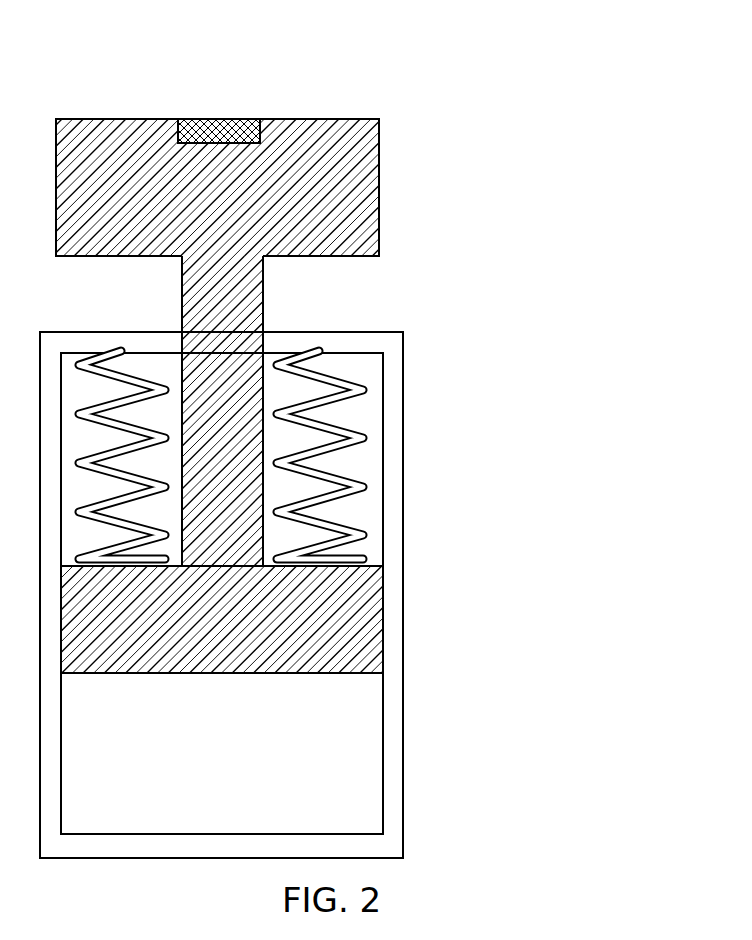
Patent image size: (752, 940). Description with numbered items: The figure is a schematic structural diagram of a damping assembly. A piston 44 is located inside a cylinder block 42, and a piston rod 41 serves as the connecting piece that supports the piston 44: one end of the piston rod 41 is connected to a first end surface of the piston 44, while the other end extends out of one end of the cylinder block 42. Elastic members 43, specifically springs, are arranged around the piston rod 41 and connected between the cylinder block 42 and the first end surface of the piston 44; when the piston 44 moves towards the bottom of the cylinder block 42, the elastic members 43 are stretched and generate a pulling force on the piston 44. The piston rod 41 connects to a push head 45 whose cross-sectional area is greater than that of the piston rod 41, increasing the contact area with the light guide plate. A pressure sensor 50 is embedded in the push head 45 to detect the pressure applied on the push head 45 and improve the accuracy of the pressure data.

The piston rod 41 is at (262, 318).
The cylinder block 42 is at (407, 433).
The elastic member 43 is at (367, 537).
The piston 44 is at (385, 622).
The push head 45 is at (382, 215).
The pressure sensor 50 is at (222, 118).